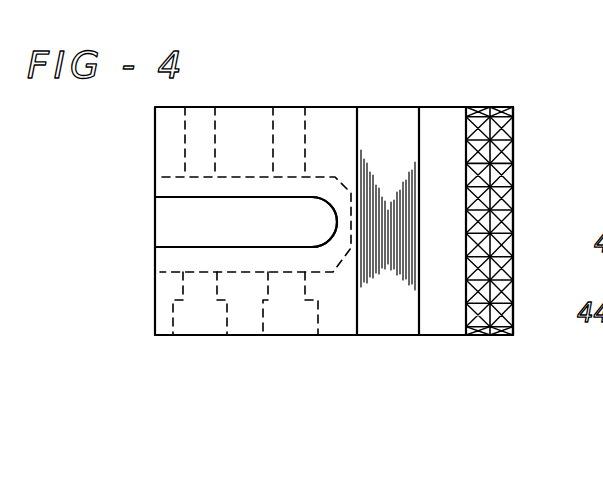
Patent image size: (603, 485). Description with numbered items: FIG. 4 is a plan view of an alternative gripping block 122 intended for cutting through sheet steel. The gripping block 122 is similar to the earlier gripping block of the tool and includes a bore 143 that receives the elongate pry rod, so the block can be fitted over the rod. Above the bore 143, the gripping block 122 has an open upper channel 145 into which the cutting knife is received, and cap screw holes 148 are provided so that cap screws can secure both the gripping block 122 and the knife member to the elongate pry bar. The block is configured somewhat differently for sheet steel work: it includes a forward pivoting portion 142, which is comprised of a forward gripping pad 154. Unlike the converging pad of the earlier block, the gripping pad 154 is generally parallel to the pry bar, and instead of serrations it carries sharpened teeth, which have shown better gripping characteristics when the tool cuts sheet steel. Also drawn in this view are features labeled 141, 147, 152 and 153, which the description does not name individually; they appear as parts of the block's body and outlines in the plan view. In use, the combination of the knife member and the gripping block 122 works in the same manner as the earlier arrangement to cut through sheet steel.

The gripping block 122 is at (393, 92).
The base layer 141 is at (166, 336).
The forward pivoting portion 142 is at (490, 338).
The bore 143 is at (178, 178).
The open upper channel 145 is at (232, 197).
The end wall of recess 147 is at (328, 206).
The cap screw holes 148 is at (216, 323).
The cavity outline 152 is at (281, 127).
The fibrous layer 153 is at (398, 325).
The forward gripping pad 154 is at (490, 120).